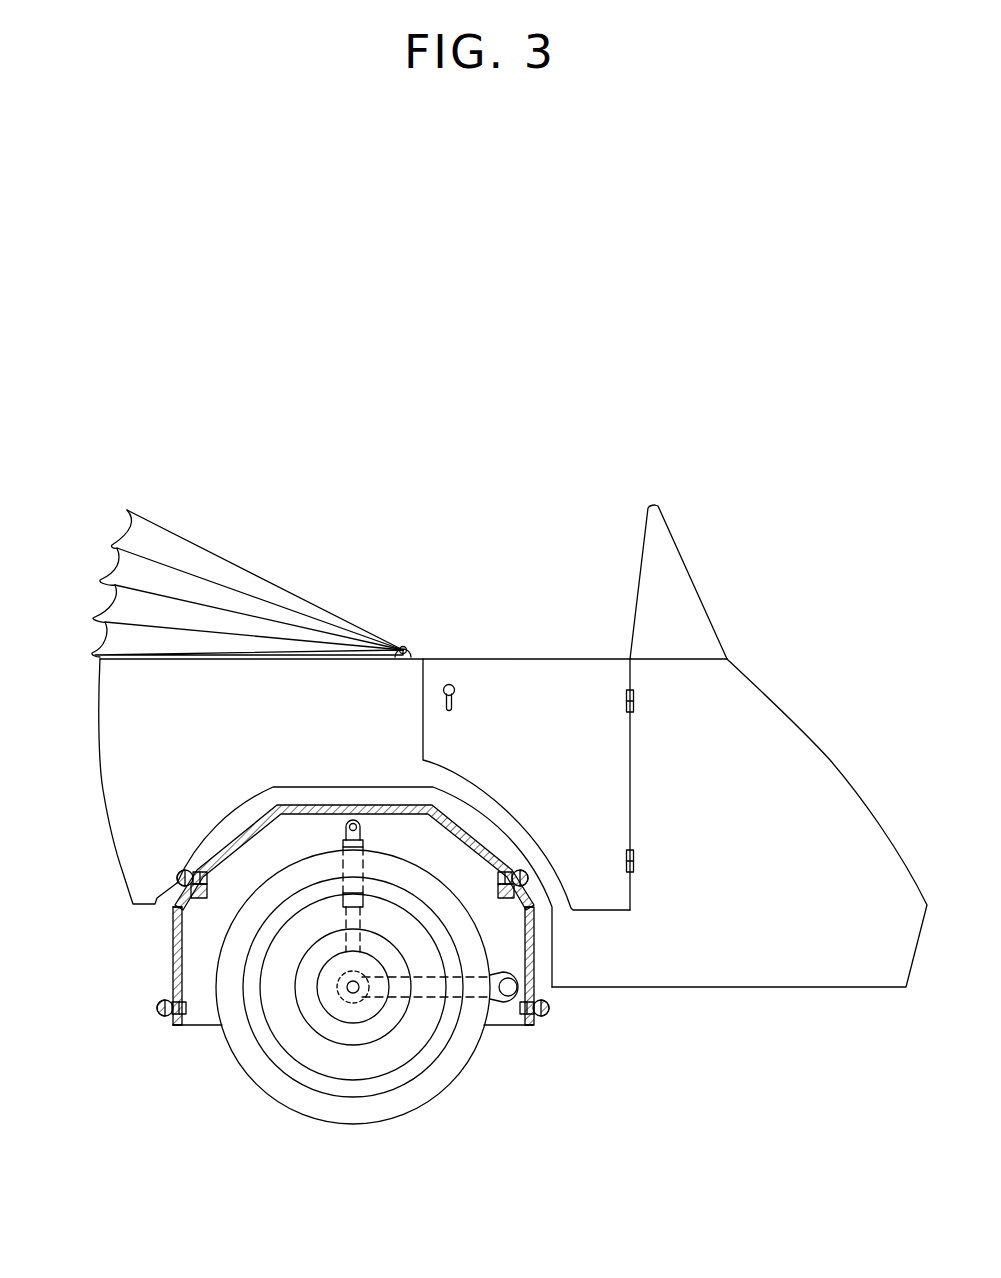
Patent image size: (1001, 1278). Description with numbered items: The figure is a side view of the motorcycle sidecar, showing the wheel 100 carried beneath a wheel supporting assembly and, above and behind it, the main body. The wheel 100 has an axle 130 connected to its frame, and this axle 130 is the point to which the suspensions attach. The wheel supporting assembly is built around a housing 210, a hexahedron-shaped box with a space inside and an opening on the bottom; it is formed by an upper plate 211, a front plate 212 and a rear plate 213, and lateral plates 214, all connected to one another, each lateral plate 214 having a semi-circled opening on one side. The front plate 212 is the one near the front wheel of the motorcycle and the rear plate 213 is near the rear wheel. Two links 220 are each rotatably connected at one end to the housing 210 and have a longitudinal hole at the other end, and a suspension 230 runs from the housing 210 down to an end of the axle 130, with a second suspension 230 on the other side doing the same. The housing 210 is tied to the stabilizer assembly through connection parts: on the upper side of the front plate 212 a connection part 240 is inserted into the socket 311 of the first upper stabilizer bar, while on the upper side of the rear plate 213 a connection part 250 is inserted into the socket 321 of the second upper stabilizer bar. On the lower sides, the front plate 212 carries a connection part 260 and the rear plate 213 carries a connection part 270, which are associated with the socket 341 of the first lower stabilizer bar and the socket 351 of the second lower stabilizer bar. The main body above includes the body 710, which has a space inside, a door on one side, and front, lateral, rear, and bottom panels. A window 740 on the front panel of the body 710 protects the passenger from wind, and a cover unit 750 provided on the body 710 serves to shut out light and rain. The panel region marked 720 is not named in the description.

The wheel 100 is at (384, 1142).
The axle 130 is at (350, 997).
The housing 210 is at (163, 962).
The upper plate 211 is at (297, 805).
The front plate 212 is at (535, 963).
The rear plate 213 is at (173, 943).
The lateral plate 214 is at (205, 1018).
The link 220 is at (418, 1008).
The suspension 230 is at (337, 910).
The connection part 240 is at (527, 873).
The connection part 250 is at (177, 872).
The connection part 260 is at (528, 1027).
The connection part 270 is at (165, 1013).
The socket 311 is at (535, 923).
The socket 321 is at (188, 893).
The socket 341 is at (545, 1013).
The socket 351 is at (180, 1017).
The body 710 is at (793, 692).
The body panel 720 is at (563, 678).
The window 740 is at (670, 572).
The cover unit 750 is at (210, 532).